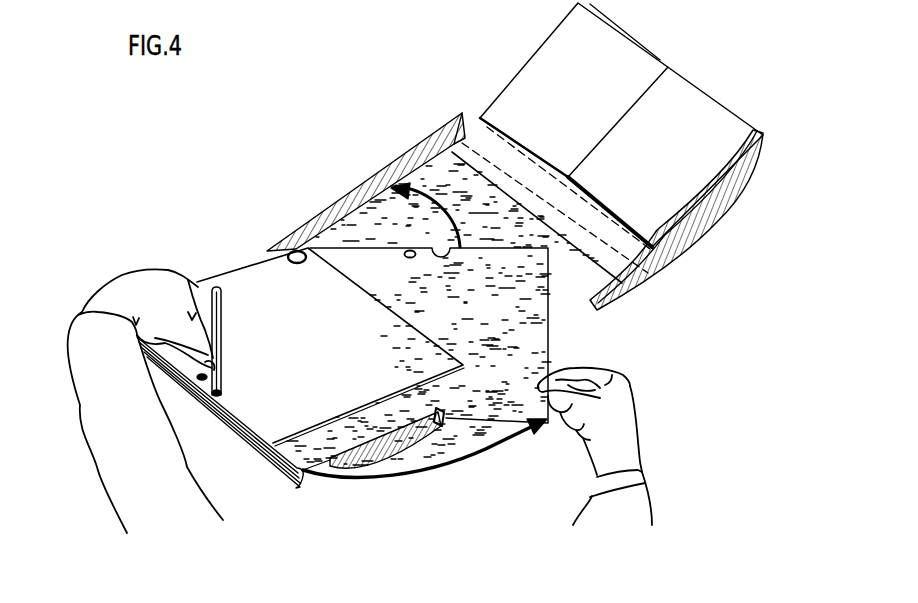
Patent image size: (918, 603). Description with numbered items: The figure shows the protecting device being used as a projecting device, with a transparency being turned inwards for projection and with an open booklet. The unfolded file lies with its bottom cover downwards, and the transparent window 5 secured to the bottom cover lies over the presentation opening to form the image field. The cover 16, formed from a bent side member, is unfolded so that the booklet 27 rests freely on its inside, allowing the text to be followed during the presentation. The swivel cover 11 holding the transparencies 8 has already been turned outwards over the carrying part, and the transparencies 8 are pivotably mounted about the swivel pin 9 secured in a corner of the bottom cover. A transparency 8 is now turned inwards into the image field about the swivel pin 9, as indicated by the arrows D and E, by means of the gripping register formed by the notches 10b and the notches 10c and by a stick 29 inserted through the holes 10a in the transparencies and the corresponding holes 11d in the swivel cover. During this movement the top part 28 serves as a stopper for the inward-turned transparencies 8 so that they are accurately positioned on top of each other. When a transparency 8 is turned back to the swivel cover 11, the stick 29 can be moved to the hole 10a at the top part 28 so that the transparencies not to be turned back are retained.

The transparent window 5 is at (598, 287).
The transparencies 8 is at (537, 318).
The swivel pin 9 is at (292, 251).
The holes 10a is at (410, 252).
The notches 10b is at (440, 413).
The notches 10c is at (330, 445).
The swivel cover 11 is at (267, 300).
The holes 11d is at (227, 393).
The cover 16 is at (668, 46).
The booklet 27 is at (723, 135).
The top part 28 is at (353, 208).
The stick 29 is at (213, 284).
The arrow D is at (503, 448).
The arrow E is at (420, 197).